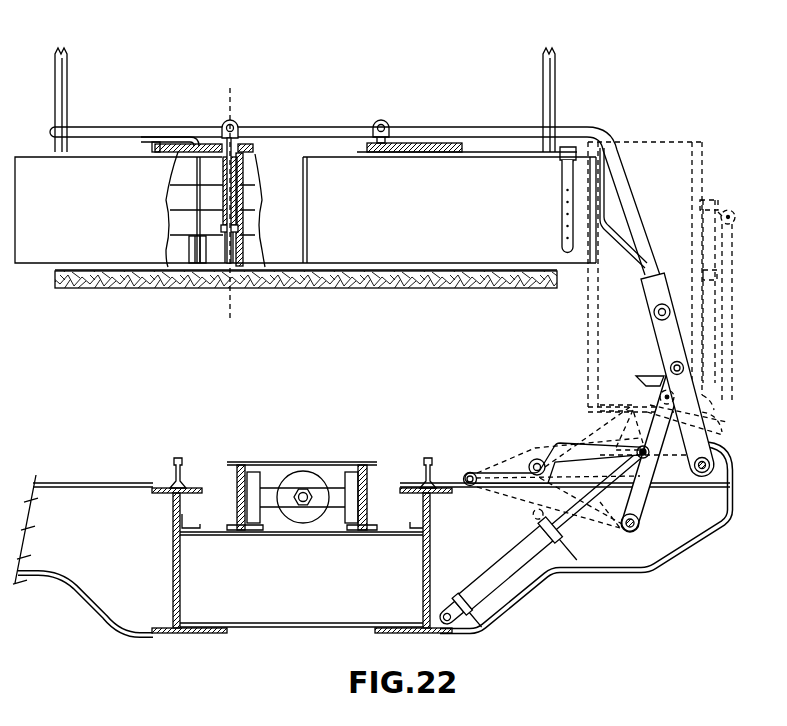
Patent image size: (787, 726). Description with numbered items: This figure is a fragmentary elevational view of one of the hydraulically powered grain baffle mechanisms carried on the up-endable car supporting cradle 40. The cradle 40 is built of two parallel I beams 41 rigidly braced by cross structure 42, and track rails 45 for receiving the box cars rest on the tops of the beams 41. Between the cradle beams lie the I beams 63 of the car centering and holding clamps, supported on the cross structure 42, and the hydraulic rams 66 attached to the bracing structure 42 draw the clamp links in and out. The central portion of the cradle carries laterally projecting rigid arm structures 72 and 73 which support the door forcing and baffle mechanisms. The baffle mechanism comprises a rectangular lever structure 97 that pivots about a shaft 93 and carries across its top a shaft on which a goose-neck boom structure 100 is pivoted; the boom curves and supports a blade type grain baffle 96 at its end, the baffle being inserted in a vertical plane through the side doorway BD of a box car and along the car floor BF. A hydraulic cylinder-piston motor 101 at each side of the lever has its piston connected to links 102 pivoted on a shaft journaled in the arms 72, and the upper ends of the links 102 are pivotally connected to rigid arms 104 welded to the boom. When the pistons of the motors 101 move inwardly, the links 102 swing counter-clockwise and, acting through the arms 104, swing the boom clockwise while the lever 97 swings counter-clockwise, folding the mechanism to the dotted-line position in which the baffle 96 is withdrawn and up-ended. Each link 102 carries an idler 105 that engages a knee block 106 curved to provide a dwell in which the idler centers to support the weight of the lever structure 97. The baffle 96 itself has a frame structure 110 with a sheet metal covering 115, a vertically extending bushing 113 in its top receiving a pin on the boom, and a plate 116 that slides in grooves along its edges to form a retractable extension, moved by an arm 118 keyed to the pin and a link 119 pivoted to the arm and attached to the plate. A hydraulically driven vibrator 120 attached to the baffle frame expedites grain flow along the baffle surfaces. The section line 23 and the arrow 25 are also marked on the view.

The grain baffle 96 is at (127, 182).
The goose-neck boom structure 100 is at (647, 215).
The rigid arm 104 is at (666, 341).
The rectangular lever structure 97 is at (700, 444).
The shaft 93 is at (709, 468).
The link 102 is at (645, 513).
The knee block 106 is at (657, 388).
The idler 105 is at (653, 399).
The hydraulic cylinder-piston motor 101 is at (490, 564).
The rigid arm structure 73 is at (603, 566).
The rigid arm structure 72 is at (92, 594).
The I beam 41 is at (173, 569).
The track rail 45 is at (177, 459).
The cross structure 42 is at (311, 585).
The car supporting cradle 40 is at (325, 631).
The I beam 63 is at (240, 511).
The hydraulic ram 66 is at (297, 477).
The sheet metal covering 115 is at (91, 193).
The plate 116 is at (408, 239).
The arm 118 is at (182, 155).
The link 119 is at (517, 153).
The bushing 113 is at (255, 174).
The frame structure 110 is at (247, 226).
The vibrator 120 is at (193, 261).
The section line 23- 23 is at (230, 88).
The direction arrow 25 is at (0, 278).
The side doorway BD is at (556, 74).
The car floor BF is at (437, 289).